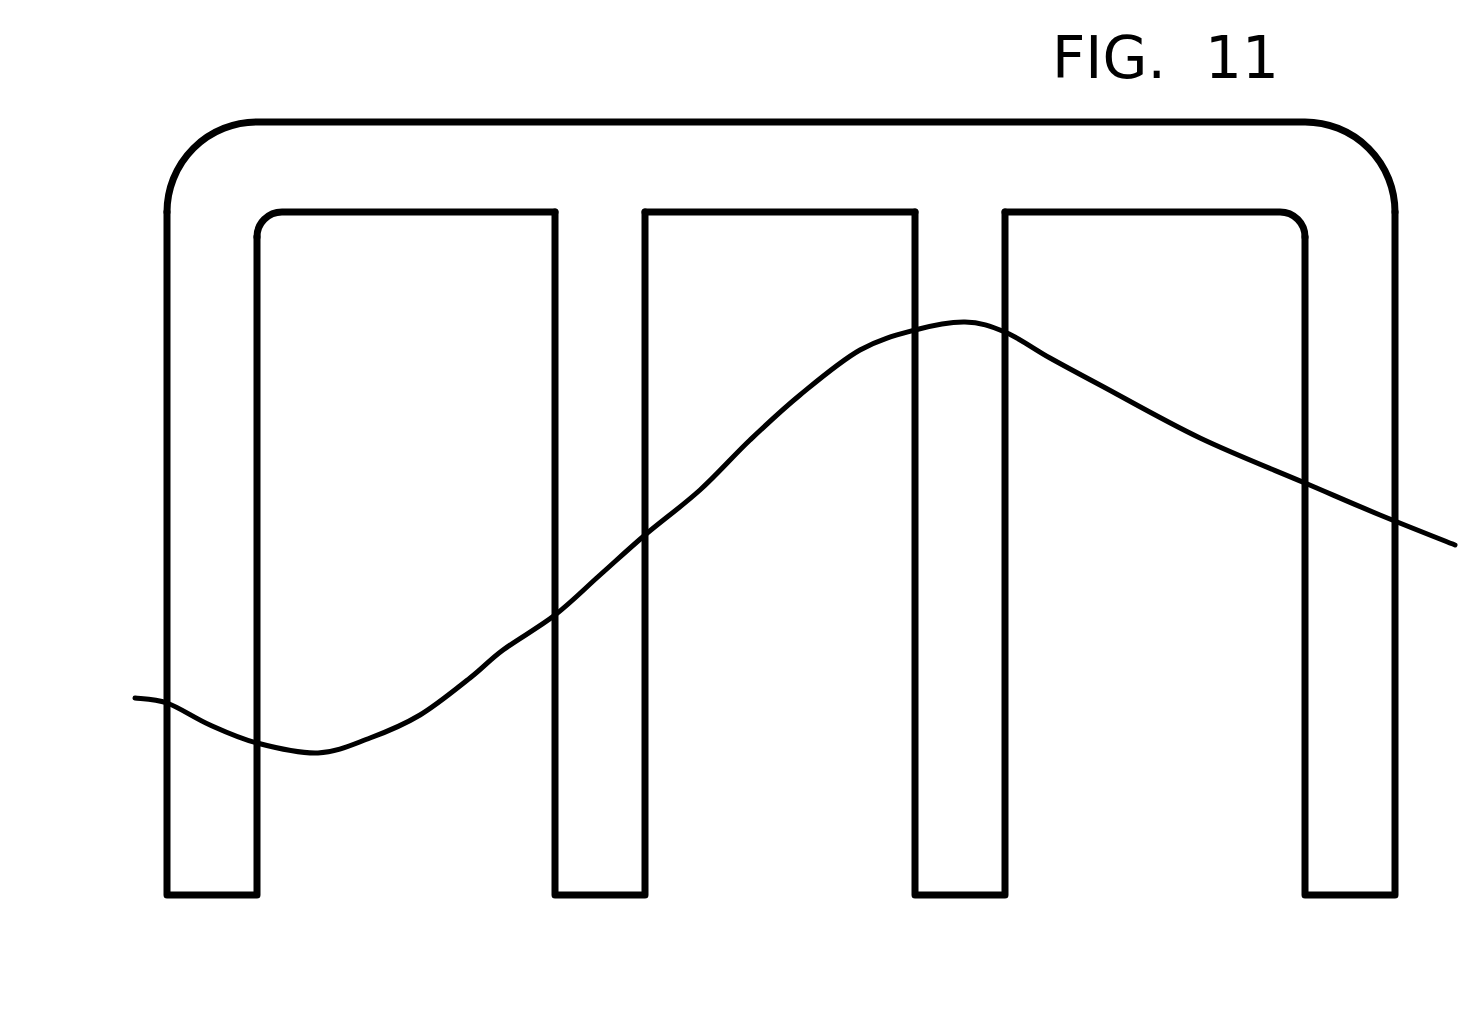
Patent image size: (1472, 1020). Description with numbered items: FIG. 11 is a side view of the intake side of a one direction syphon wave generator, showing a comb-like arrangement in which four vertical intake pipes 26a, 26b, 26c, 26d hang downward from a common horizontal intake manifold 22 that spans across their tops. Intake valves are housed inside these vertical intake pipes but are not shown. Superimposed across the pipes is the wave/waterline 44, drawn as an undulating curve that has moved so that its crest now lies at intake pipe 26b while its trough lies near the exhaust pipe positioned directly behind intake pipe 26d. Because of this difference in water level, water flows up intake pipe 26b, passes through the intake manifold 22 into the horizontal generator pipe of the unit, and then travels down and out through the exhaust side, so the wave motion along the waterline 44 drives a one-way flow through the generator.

The intake manifold 22 is at (856, 212).
The intake pipe 26a is at (1305, 425).
The intake pipe 26b is at (1005, 548).
The intake pipe 26c is at (555, 498).
The intake pipe 26d is at (257, 675).
The wave/waterline 44 is at (705, 487).